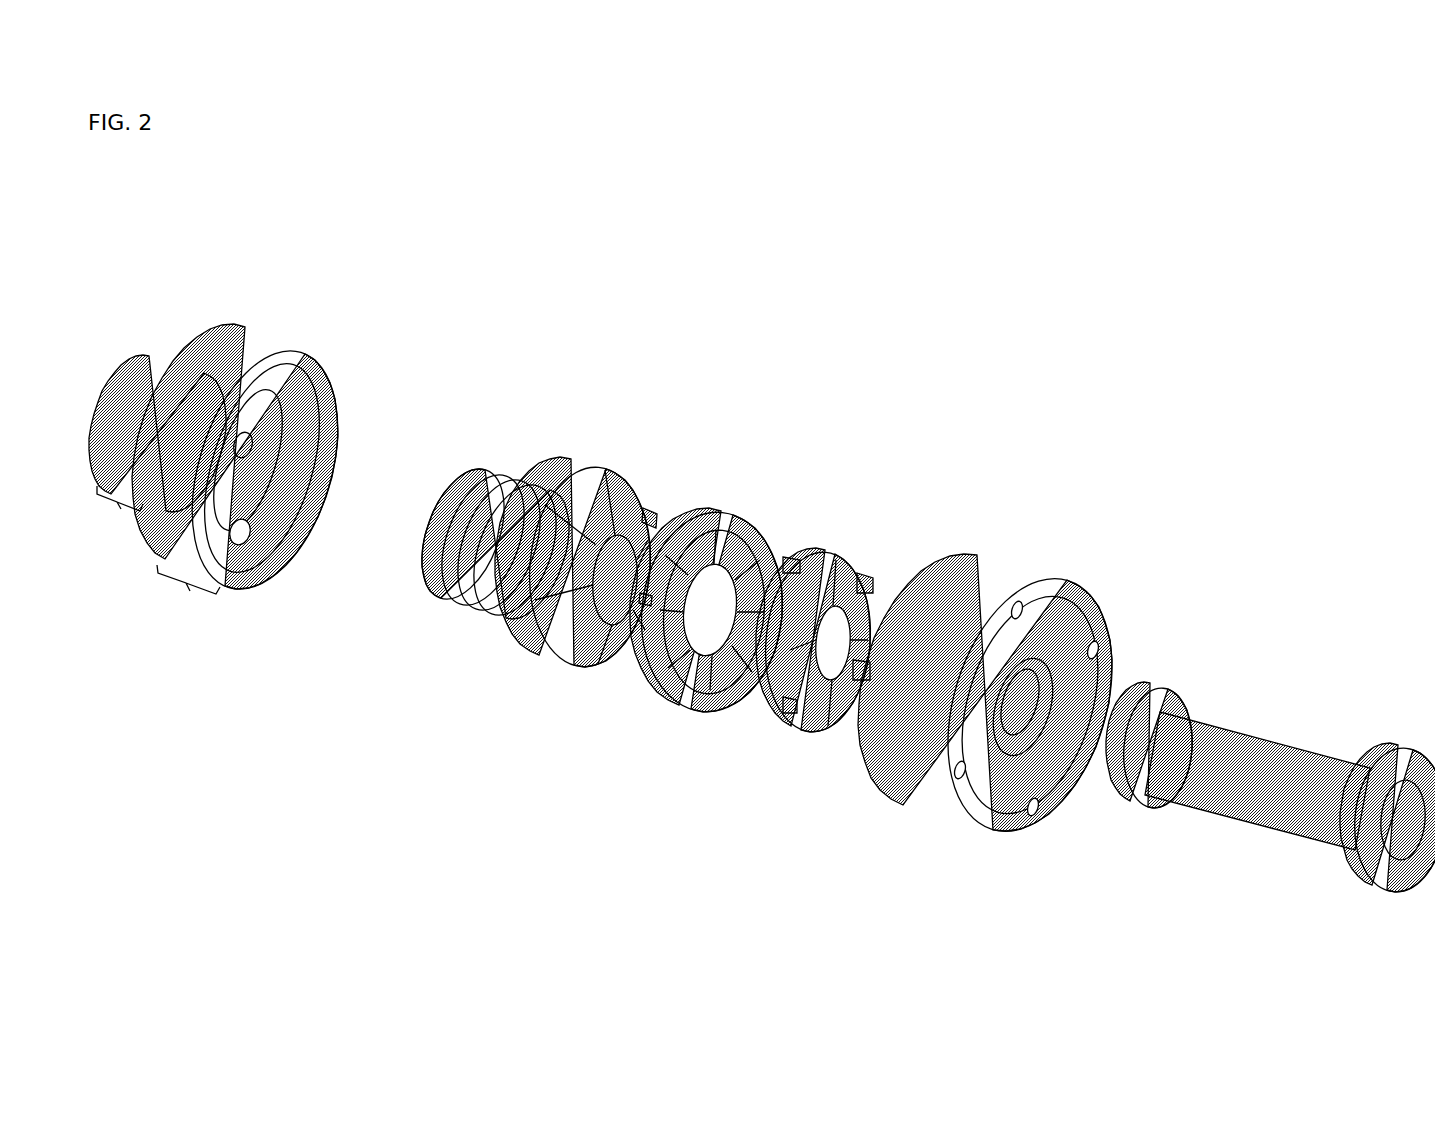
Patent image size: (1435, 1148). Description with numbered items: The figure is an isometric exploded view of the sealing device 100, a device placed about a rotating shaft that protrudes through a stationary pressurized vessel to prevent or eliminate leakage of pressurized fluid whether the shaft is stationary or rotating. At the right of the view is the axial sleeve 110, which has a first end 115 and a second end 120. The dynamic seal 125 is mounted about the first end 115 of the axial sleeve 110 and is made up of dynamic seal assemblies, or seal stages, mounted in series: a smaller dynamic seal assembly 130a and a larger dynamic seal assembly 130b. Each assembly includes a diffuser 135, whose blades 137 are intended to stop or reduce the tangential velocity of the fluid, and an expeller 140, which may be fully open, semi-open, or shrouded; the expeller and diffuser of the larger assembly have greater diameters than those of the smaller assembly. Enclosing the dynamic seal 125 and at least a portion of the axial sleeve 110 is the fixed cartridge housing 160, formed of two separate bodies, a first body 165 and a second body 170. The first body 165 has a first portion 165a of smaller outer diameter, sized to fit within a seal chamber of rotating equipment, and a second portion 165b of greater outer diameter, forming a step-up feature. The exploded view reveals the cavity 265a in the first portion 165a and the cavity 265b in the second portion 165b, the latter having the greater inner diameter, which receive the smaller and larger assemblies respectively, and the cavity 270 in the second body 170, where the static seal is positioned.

The sealing device 100 is at (413, 184).
The axial sleeve 110 is at (1272, 730).
The first end 115 is at (1157, 688).
The second end 120 is at (1400, 750).
The dynamic seal 125 is at (898, 373).
The smaller dynamic seal assembly 130a is at (452, 610).
The larger dynamic seal assembly 130b is at (540, 675).
The diffuser 135 is at (736, 508).
The blades 137 is at (706, 692).
The expeller 140 is at (822, 550).
The fixed cartridge housing 160 is at (268, 320).
The first body 165 is at (158, 362).
The first portion 165a is at (115, 524).
The second portion 165b is at (189, 609).
The second body 170 is at (1010, 548).
The cavity 265a is at (262, 449).
The cavity 265b is at (262, 541).
The cavity 270 is at (1020, 735).